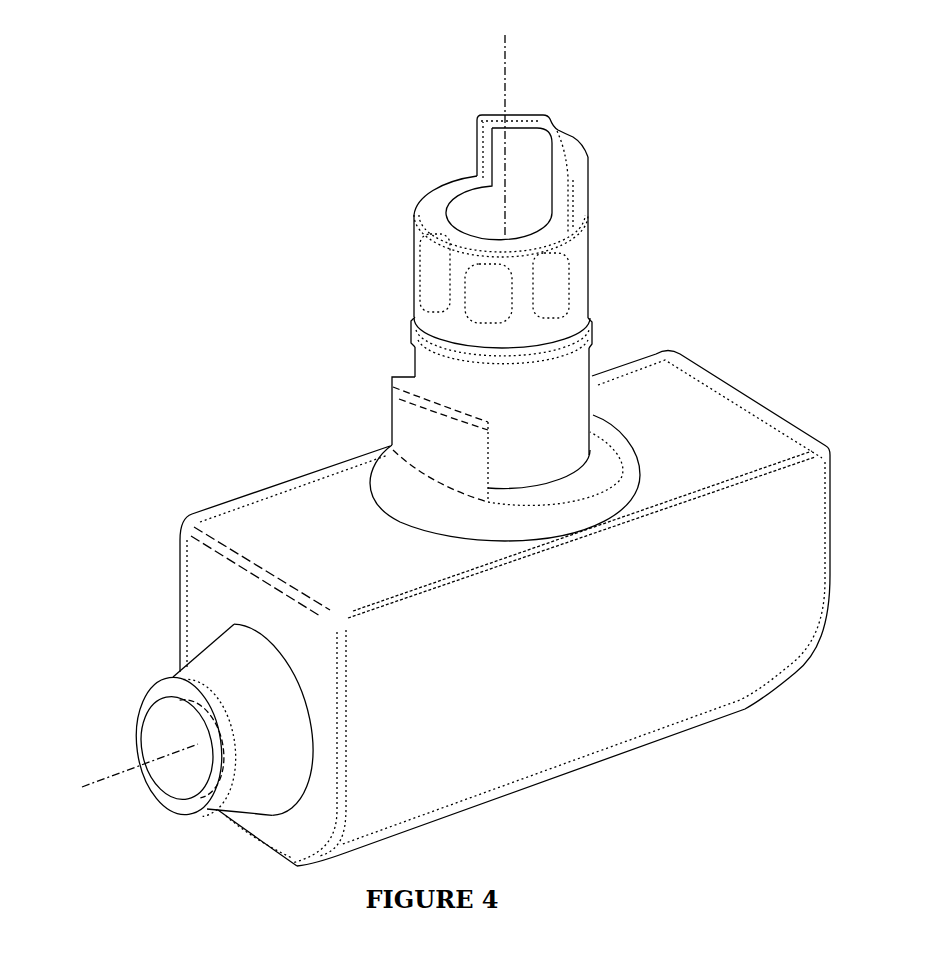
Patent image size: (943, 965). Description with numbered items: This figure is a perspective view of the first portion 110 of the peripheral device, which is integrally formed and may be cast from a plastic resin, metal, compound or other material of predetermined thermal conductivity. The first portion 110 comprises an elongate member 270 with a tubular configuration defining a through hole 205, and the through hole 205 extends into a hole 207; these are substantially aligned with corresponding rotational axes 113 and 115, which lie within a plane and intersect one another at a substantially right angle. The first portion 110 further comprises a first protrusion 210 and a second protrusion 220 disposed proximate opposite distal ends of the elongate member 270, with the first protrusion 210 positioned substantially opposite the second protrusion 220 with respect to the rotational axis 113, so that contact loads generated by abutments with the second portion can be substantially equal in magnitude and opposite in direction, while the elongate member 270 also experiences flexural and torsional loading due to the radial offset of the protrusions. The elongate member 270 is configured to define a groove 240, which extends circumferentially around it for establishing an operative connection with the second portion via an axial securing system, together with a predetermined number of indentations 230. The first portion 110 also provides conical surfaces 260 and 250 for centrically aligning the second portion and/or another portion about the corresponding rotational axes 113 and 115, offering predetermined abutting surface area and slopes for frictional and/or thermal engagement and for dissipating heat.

The first portion 110 is at (86, 437).
The rotational axis 113 is at (503, 122).
The rotational axis 115 is at (114, 776).
The through hole 205 is at (493, 218).
The hole 207 is at (172, 743).
The first protrusion 210 is at (418, 444).
The second protrusion 220 is at (588, 157).
The indentations 230 is at (427, 292).
The groove 240 is at (592, 328).
The conical surface 250 is at (168, 668).
The conical surface 260 is at (571, 537).
The elongate member 270 is at (372, 308).